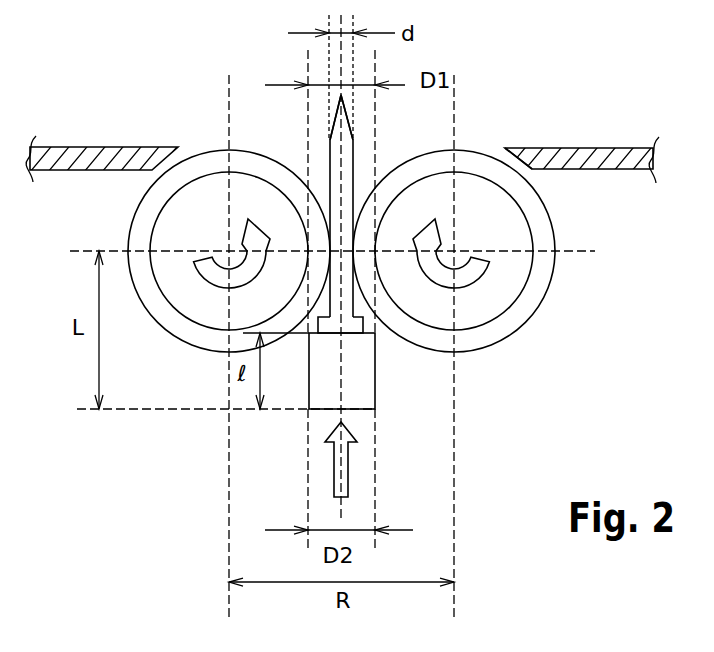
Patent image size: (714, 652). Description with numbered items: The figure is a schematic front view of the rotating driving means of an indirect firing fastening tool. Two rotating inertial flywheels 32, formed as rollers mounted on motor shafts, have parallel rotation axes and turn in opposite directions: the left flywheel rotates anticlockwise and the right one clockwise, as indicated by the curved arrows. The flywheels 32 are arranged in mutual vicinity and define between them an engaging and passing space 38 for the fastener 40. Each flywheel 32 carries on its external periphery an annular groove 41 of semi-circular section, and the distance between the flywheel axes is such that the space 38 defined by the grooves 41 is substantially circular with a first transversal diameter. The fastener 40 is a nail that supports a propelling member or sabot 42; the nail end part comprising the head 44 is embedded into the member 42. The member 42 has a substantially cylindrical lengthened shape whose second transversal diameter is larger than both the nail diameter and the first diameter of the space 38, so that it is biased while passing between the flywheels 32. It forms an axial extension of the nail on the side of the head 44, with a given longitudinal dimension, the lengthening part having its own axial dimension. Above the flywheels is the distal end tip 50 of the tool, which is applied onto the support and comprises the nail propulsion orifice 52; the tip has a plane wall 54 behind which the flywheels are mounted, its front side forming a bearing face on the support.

The rotating inertial flywheel 32 is at (148, 315).
The annular groove 41 is at (192, 327).
The fastener 40 is at (330, 160).
The engaging and passing space 38 is at (362, 192).
The head 44 is at (355, 328).
The propelling member or sabot 42 is at (375, 388).
The distal end tip 50 is at (351, 128).
The nail propulsion orifice 52 is at (503, 152).
The plane wall 54 is at (548, 148).